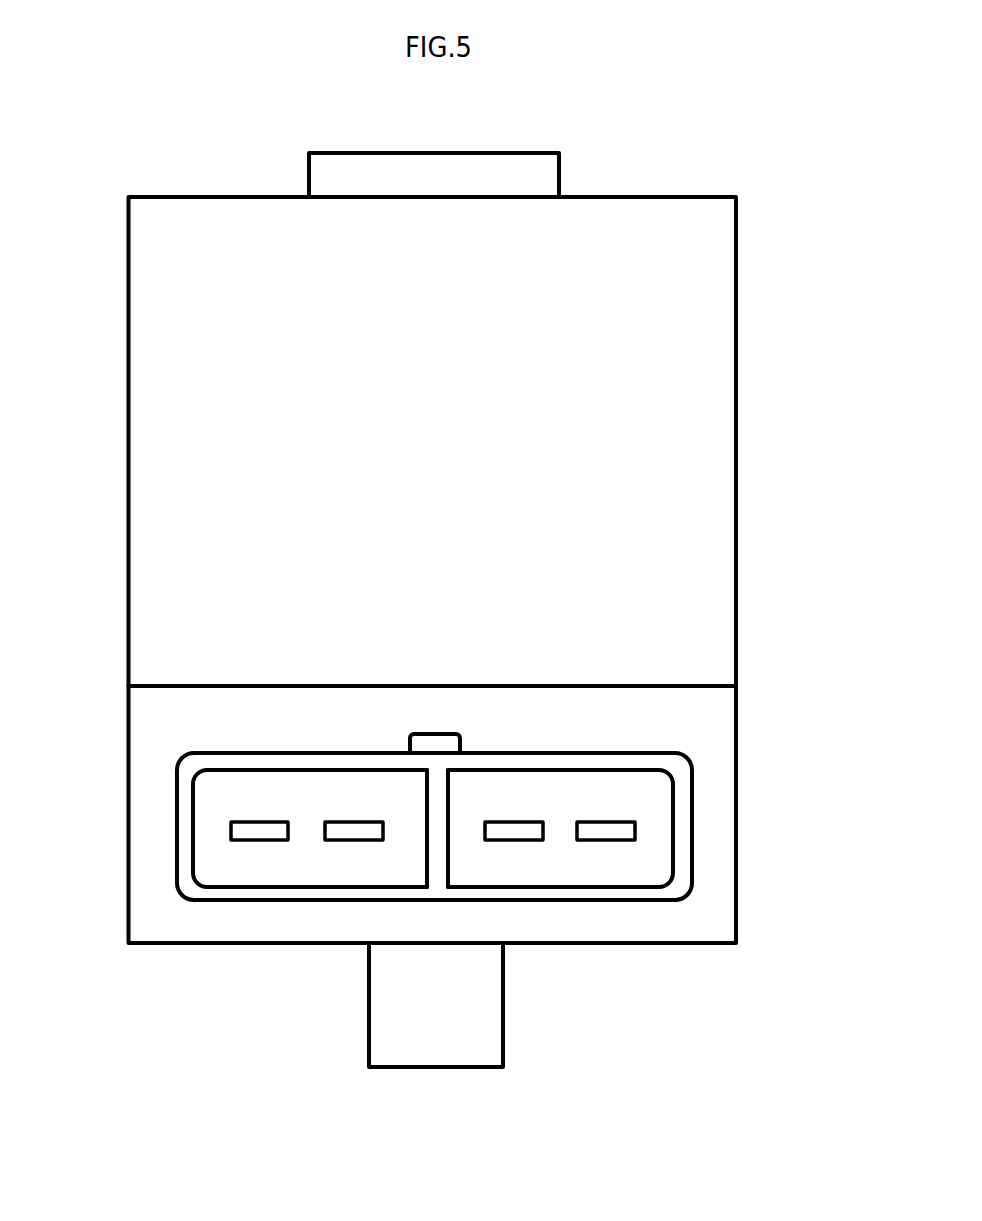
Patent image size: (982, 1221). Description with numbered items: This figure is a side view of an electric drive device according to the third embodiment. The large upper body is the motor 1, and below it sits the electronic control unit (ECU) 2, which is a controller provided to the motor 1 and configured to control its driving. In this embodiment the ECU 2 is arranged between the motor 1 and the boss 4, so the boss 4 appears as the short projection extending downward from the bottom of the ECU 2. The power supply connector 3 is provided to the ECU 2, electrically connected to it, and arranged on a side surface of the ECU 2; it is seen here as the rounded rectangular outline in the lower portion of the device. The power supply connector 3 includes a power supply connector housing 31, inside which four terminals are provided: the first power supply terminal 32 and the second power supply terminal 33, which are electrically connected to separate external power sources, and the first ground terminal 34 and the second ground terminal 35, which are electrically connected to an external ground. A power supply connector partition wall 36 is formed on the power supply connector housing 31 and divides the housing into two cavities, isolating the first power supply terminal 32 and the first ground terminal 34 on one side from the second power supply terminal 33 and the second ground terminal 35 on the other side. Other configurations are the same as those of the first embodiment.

The motor 1 is at (138, 452).
The electronic control unit 2 is at (140, 806).
The power supply connector 3 is at (683, 827).
The boss 4 is at (378, 1010).
The power supply connector housing 31 is at (190, 764).
The first power supply terminal 32 is at (238, 830).
The second power supply terminal 33 is at (635, 830).
The first ground terminal 34 is at (325, 830).
The second ground terminal 35 is at (540, 832).
The power supply connector partition wall 36 is at (438, 793).